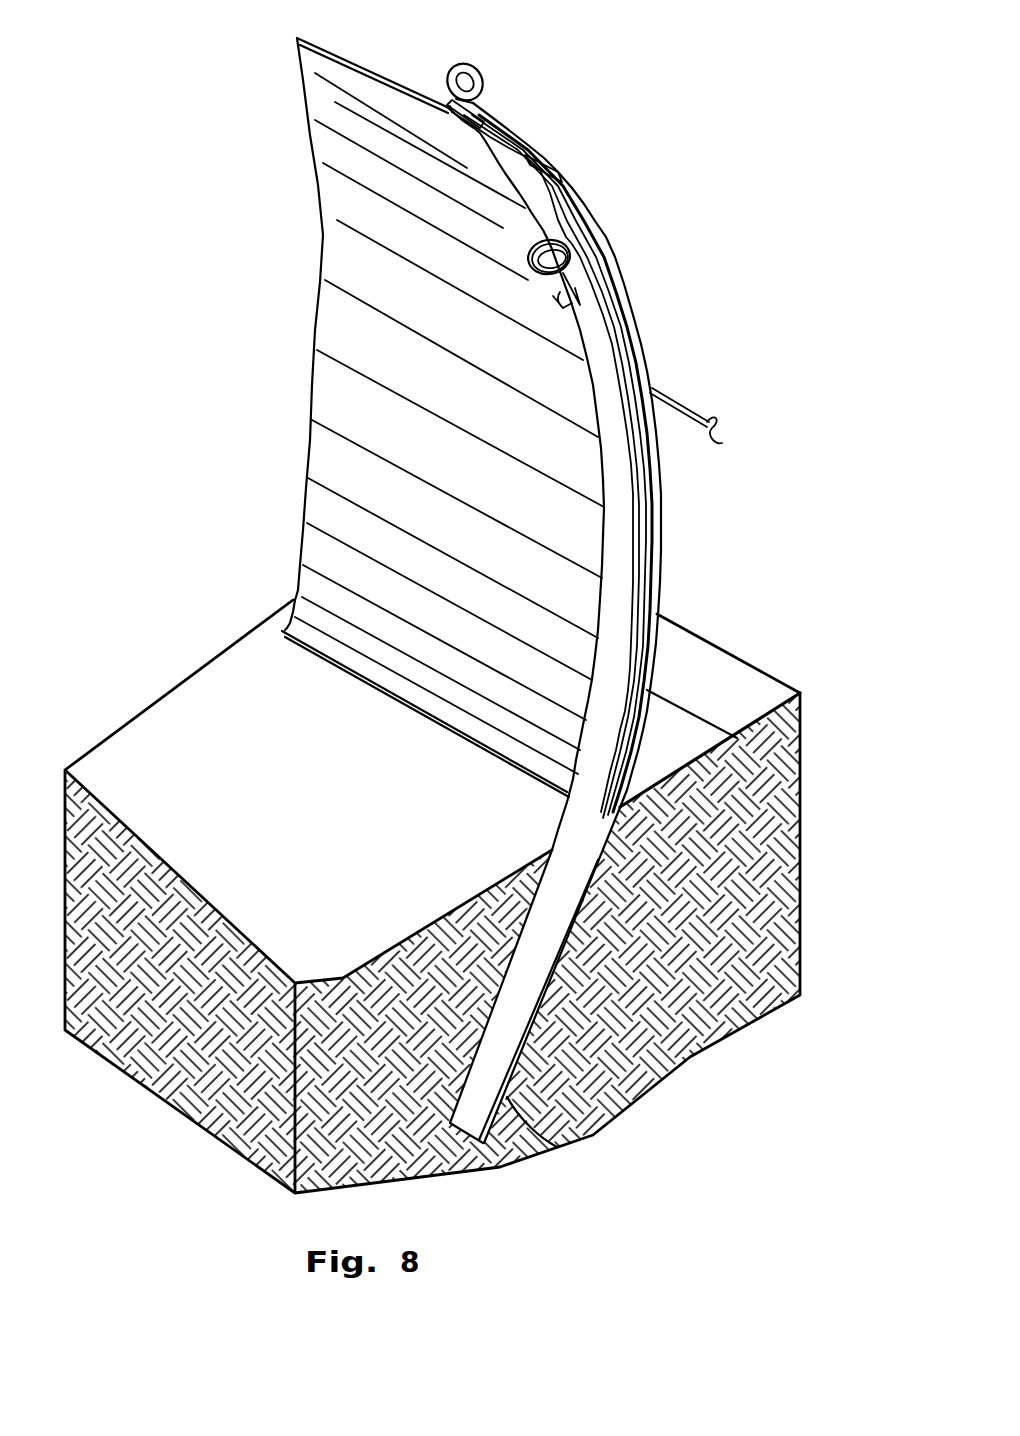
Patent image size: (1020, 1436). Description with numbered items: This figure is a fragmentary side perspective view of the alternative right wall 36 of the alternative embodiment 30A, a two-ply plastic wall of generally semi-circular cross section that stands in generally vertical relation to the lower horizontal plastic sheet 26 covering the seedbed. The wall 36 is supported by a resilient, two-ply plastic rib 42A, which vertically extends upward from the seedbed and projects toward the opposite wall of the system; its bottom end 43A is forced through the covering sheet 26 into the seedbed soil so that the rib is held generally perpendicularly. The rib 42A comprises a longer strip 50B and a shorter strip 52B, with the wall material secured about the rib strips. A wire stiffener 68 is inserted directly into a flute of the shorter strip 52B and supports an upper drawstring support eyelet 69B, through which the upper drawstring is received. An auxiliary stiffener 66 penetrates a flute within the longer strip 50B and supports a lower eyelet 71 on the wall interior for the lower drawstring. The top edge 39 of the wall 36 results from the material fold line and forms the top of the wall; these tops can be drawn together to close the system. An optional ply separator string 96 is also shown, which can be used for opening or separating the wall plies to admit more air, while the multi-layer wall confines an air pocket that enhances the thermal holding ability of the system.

The alternative embodiment 30A is at (797, 60).
The alternative wall 36 is at (316, 247).
The top edge 39 is at (333, 60).
The resilient plastic rib 42A is at (667, 550).
The bottom end of rib 43A is at (557, 1147).
The longer rib strip 50B is at (630, 486).
The shorter rib strip 52B is at (633, 767).
The auxiliary stiffener 66 is at (562, 310).
The wire stiffener 68 is at (502, 127).
The upper drawstring support eyelet 69B is at (470, 63).
The lower eyelet 71 is at (550, 240).
The ply separator string 96 is at (712, 420).
The plastic sheet 26 is at (459, 896).